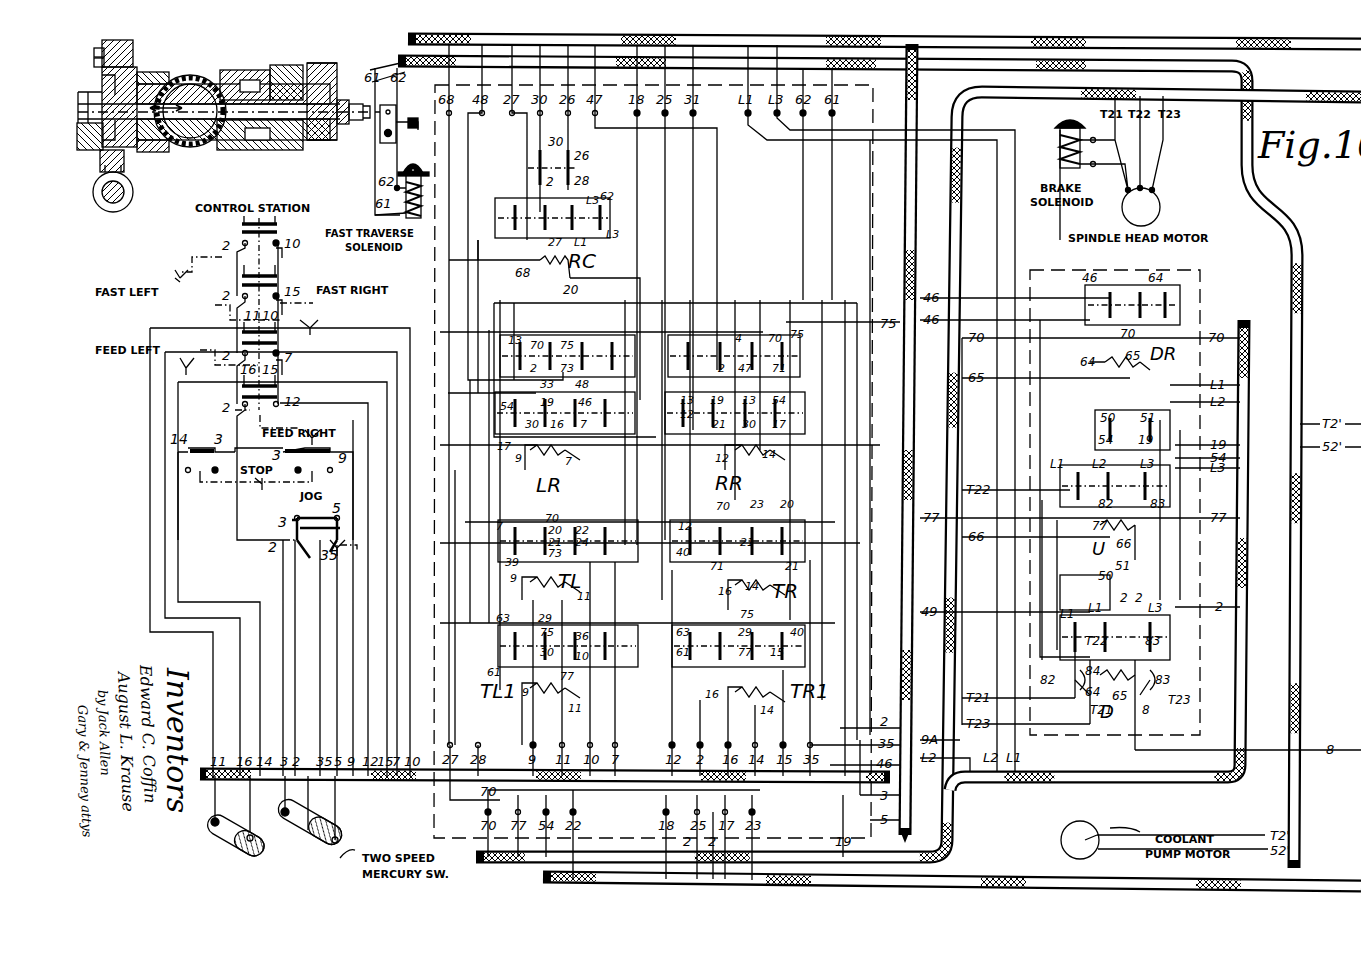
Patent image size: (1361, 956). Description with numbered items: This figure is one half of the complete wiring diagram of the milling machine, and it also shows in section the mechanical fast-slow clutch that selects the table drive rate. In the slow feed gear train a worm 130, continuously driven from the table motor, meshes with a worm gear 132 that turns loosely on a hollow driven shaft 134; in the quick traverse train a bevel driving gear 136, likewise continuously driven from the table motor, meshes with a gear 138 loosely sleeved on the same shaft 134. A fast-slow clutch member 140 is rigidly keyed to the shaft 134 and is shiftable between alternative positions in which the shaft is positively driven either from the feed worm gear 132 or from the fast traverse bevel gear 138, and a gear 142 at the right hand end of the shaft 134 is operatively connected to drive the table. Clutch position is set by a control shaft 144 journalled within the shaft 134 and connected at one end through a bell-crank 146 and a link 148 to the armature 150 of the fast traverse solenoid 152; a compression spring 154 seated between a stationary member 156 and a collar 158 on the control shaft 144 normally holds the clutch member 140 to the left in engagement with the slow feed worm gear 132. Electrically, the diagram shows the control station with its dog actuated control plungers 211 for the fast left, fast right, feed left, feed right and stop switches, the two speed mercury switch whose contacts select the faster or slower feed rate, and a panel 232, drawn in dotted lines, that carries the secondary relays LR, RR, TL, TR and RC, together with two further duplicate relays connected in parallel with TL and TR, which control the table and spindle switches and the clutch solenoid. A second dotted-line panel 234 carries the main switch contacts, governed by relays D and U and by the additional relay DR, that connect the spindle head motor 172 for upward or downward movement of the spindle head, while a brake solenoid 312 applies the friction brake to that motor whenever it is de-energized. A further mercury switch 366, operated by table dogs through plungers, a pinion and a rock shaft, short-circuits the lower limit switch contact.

The worm 130 is at (106, 200).
The worm gear 132 is at (123, 50).
The hollow driven shaft 134 is at (102, 84).
The bevel driving gear 136 is at (195, 145).
The gear 138 is at (222, 70).
The fast-slow clutch member 140 is at (145, 142).
The gear 142 is at (300, 143).
The control shaft 144 is at (84, 140).
The bell-crank 146 is at (392, 118).
The link 148 is at (412, 145).
The armature 150 is at (430, 178).
The solenoid 152 is at (395, 212).
The compression spring 154 is at (345, 70).
The stationary member 156 is at (352, 124).
The collar 158 is at (338, 65).
The spindle head motor 172 is at (1147, 204).
The dog actuated control plungers 211 is at (256, 220).
The panel 232 is at (432, 818).
The panel 234 is at (1200, 288).
The brake solenoid 312 is at (1065, 128).
The mercury switch 366 is at (232, 850).